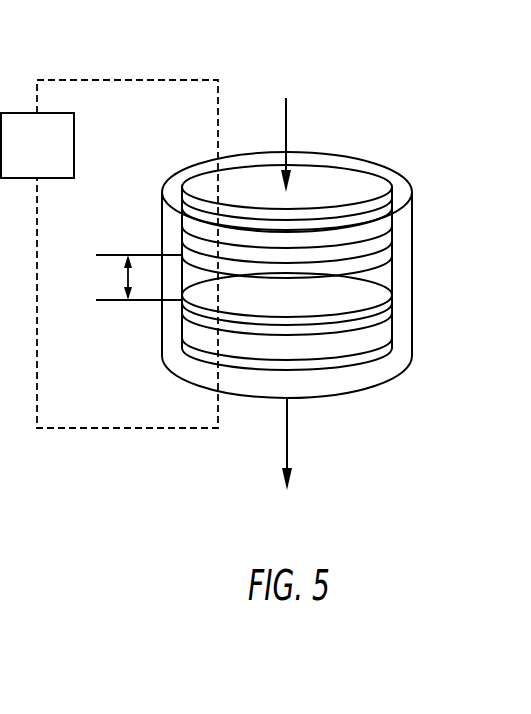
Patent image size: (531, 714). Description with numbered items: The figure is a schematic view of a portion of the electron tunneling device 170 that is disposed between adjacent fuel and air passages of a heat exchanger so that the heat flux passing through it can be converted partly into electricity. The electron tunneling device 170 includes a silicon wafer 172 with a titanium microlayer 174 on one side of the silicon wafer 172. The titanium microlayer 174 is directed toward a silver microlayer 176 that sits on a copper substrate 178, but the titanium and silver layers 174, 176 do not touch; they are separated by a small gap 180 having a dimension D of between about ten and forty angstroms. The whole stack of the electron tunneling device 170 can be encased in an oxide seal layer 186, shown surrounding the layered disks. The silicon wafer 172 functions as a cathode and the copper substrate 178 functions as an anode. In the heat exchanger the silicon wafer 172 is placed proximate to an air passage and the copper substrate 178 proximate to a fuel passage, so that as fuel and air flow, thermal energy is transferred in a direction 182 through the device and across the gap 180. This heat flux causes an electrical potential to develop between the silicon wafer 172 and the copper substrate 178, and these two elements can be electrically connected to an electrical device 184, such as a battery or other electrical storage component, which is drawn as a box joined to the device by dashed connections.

The electron tunneling device 170 is at (405, 97).
The silicon wafer 172 is at (383, 230).
The titanium microlayer 174 is at (383, 253).
The silver microlayer 176 is at (383, 315).
The copper substrate 178 is at (385, 342).
The gap 180 is at (378, 274).
The direction of thermal energy transfer 182 is at (285, 123).
The electrical device 184 is at (109, 254).
The oxide seal layer 186 is at (400, 175).